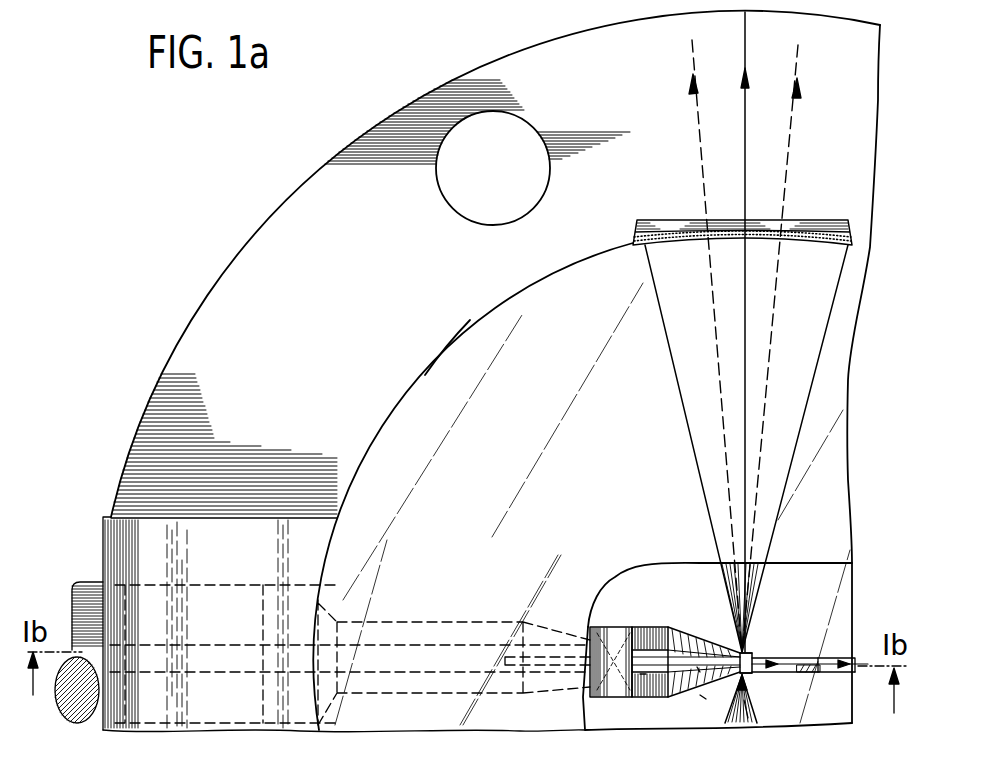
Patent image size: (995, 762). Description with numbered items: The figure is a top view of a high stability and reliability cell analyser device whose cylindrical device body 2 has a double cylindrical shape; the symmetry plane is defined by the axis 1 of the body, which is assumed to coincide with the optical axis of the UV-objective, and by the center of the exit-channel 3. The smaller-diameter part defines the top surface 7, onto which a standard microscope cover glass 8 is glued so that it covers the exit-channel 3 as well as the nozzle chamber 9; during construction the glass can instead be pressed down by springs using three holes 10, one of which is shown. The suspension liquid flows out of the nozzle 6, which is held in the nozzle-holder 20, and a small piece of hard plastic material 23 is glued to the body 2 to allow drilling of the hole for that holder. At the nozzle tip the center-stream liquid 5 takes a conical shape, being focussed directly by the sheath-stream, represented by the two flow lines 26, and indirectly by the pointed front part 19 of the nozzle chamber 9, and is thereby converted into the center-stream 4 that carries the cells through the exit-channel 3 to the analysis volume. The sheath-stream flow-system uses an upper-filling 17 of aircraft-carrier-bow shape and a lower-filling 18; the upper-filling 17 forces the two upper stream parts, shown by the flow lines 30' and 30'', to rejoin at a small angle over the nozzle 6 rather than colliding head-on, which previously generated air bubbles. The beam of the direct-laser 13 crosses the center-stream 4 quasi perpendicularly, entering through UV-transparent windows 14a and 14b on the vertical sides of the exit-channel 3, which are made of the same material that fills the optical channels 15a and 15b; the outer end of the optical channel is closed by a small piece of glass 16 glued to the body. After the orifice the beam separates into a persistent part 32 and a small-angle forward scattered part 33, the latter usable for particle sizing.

The axis 1 is at (733, 680).
The device body 2 is at (302, 228).
The exit-channel 3 is at (762, 658).
The center-stream 4 is at (797, 664).
The center-stream liquid 5 is at (708, 648).
The nozzle 6 is at (645, 648).
The top surface 7 is at (442, 355).
The cover glass 8 is at (405, 447).
The nozzle chamber 9 is at (707, 650).
The holes 10 is at (458, 125).
The direct-laser beam 13 is at (750, 713).
The window 14a is at (748, 650).
The window 14b is at (748, 678).
The optical channel 15a is at (741, 728).
The optical channel 15b is at (812, 365).
The small piece of glass 16 is at (672, 223).
The upper-filling 17 is at (597, 690).
The lower-filling 18 is at (642, 677).
The front part 19 is at (703, 700).
The nozzle-holder 20 is at (330, 606).
The piece of hard plastic material 23 is at (237, 520).
The flow lines 26 is at (820, 658).
The flow line 30' is at (637, 676).
The flow line 30'' is at (684, 625).
The persistent part of the beam 32 is at (738, 127).
The forward scattered part of the beam 33 is at (793, 147).